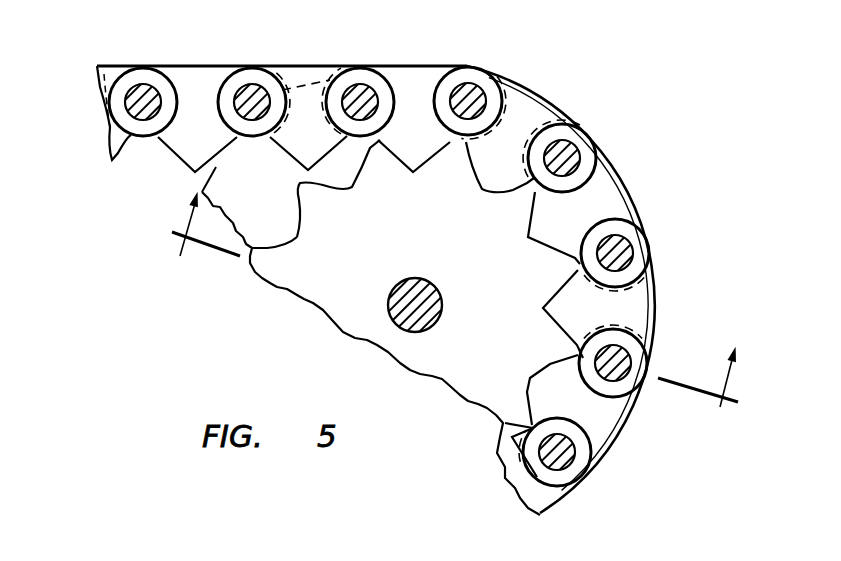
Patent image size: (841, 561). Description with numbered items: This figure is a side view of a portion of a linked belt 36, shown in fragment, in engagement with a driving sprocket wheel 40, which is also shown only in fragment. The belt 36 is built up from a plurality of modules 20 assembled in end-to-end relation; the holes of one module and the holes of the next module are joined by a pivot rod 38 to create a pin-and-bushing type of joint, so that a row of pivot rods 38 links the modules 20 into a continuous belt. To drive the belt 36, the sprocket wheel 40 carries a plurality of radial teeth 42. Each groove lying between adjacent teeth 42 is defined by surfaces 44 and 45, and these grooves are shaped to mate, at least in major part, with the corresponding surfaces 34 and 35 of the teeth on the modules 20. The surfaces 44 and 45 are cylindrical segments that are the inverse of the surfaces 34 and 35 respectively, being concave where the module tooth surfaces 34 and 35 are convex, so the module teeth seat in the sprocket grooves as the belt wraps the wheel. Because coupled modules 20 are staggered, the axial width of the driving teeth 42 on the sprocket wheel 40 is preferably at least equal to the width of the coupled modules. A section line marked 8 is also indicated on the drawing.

The section line 8- 8 is at (450, 310).
The module 20 is at (203, 78).
The tooth surface 34 is at (177, 160).
The tooth surface 35 is at (217, 168).
The belt 36 is at (103, 132).
The pivot rod 38 is at (155, 86).
The sprocket wheel 40 is at (357, 285).
The radial tooth 42 is at (267, 284).
The groove surface 44 is at (268, 248).
The groove surface 45 is at (292, 203).